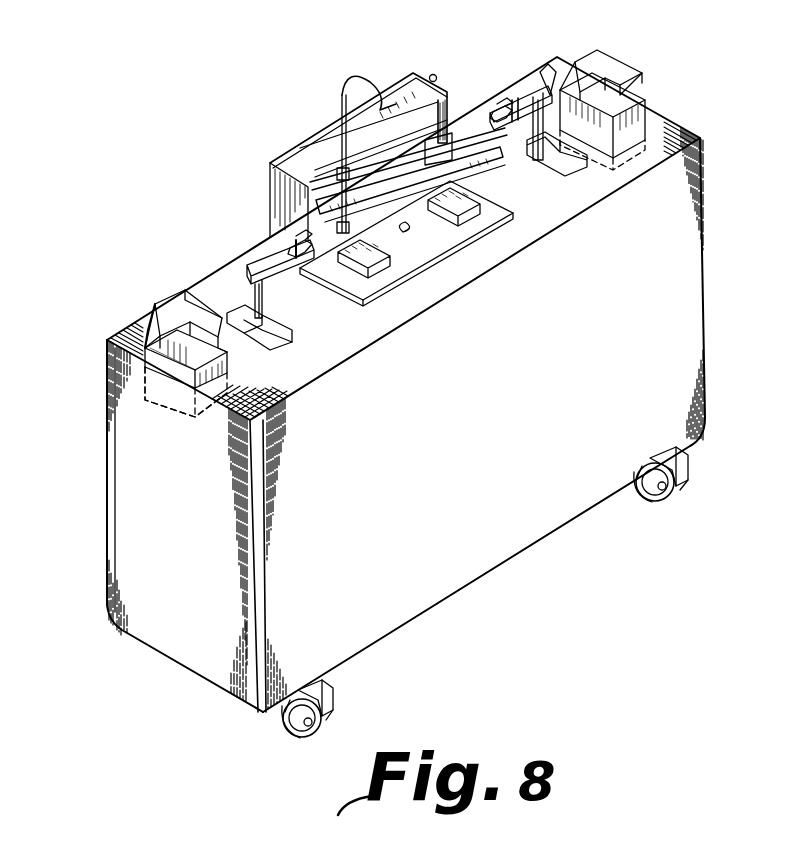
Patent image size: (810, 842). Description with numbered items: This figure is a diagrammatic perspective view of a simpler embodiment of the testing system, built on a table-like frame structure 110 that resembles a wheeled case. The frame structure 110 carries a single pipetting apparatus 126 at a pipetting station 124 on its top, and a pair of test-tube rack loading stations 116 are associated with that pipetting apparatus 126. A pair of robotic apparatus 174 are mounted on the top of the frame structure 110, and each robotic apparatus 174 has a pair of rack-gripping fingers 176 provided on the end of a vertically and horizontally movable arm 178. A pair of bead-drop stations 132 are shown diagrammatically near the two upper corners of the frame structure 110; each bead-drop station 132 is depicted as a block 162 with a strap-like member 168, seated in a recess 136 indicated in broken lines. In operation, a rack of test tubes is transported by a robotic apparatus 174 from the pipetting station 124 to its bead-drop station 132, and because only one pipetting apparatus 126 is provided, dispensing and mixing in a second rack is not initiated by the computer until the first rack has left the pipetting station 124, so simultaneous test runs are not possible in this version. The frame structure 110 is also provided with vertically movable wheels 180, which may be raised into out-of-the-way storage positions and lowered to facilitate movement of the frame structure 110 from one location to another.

The frame structure 110 is at (185, 265).
The test-tube rack loading station 116 is at (382, 253).
The pipetting station 124 is at (392, 80).
The pipetting apparatus 126 is at (365, 180).
The bead-drop station 132 is at (125, 310).
The recess in case top 136 is at (145, 392).
The latch block 162 is at (165, 300).
The latch strap 168 is at (160, 312).
The robotic apparatus 174 is at (267, 272).
The rack-gripping fingers 176 is at (303, 250).
The arm 178 is at (297, 263).
The wheels 180 is at (345, 696).